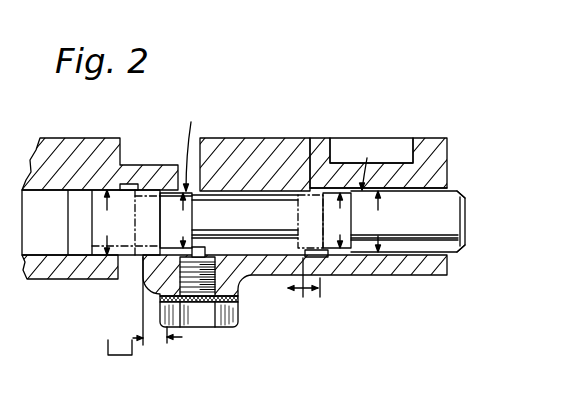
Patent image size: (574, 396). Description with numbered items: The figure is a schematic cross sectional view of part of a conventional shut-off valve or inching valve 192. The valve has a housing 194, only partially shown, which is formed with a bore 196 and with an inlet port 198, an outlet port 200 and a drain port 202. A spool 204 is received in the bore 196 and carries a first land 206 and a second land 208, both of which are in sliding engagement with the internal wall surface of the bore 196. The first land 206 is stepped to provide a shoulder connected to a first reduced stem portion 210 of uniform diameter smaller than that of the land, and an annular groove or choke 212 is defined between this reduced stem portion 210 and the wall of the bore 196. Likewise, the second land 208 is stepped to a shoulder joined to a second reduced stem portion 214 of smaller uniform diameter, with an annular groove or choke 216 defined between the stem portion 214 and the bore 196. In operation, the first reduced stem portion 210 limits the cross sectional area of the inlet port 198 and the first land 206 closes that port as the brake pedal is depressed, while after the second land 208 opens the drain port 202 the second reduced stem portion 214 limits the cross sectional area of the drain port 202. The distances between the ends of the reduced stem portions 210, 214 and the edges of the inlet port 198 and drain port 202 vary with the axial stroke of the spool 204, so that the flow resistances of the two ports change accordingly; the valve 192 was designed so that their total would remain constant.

The shut-off valve 192 is at (283, 84).
The housing 194 is at (445, 170).
The bore 196 is at (281, 215).
The inlet port 198 is at (313, 190).
The outlet port 200 is at (209, 138).
The drain port 202 is at (133, 262).
The spool 204 is at (470, 199).
The first land 206 is at (410, 262).
The second land 208 is at (92, 274).
The first reduced stem portion 210 is at (338, 253).
The annular groove or choke 212 is at (348, 250).
The second reduced stem portion 214 is at (184, 292).
The annular groove or choke 216 is at (167, 189).